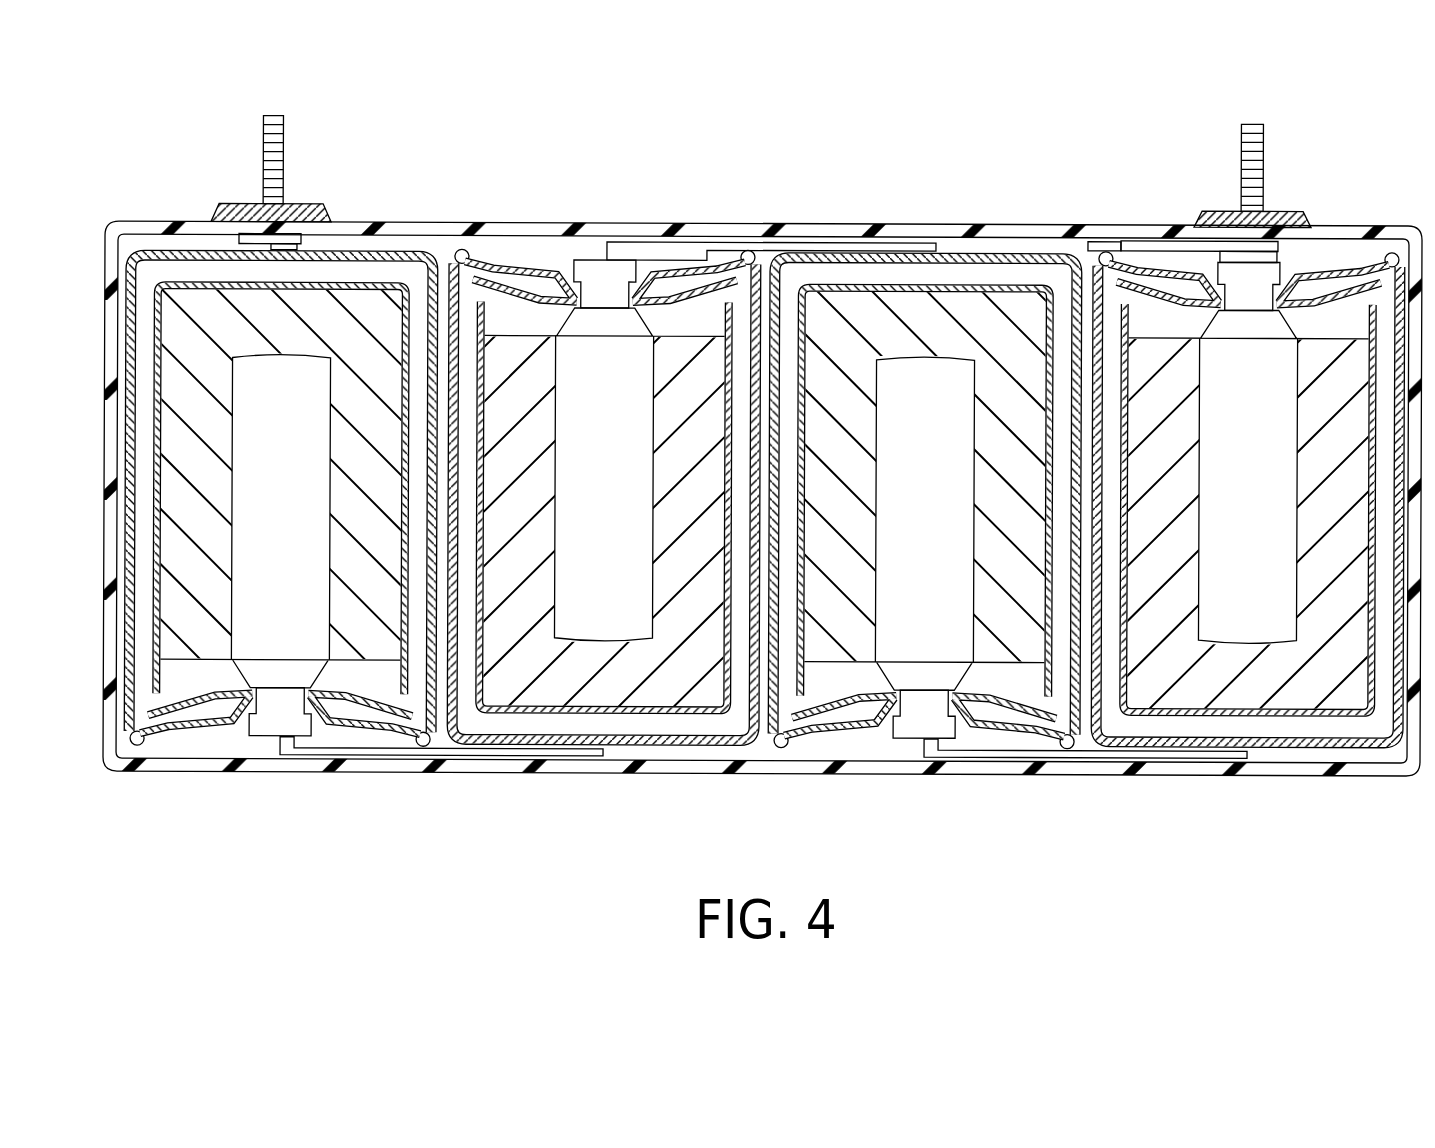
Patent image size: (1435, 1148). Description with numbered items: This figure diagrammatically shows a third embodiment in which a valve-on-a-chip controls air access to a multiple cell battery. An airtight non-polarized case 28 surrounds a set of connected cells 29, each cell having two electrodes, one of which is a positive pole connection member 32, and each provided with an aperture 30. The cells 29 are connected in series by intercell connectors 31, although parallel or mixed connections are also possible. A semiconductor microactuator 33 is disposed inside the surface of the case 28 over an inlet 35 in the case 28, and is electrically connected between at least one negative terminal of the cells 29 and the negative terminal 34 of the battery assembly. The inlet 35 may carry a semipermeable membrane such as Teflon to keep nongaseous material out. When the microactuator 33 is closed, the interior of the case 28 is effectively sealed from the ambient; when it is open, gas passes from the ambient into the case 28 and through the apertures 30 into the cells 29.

The case 28 is at (785, 221).
The cells 29 is at (301, 531).
The apertures 30 is at (686, 266).
The intercell connectors 31 is at (632, 240).
The positive pole connection member 32 is at (285, 142).
The semiconductor microactuator 33 is at (1103, 225).
The negative terminal 34 is at (1240, 178).
The inlet 35 is at (1145, 223).